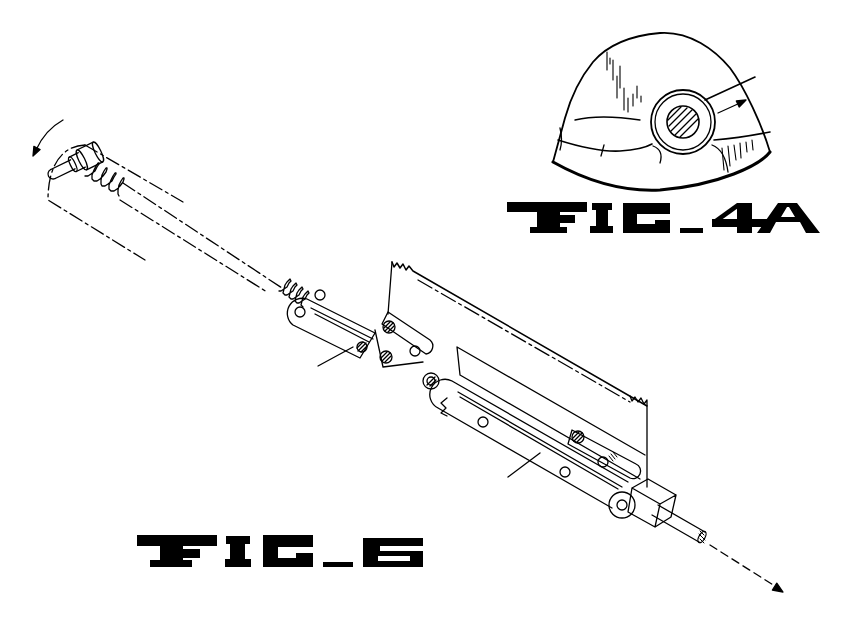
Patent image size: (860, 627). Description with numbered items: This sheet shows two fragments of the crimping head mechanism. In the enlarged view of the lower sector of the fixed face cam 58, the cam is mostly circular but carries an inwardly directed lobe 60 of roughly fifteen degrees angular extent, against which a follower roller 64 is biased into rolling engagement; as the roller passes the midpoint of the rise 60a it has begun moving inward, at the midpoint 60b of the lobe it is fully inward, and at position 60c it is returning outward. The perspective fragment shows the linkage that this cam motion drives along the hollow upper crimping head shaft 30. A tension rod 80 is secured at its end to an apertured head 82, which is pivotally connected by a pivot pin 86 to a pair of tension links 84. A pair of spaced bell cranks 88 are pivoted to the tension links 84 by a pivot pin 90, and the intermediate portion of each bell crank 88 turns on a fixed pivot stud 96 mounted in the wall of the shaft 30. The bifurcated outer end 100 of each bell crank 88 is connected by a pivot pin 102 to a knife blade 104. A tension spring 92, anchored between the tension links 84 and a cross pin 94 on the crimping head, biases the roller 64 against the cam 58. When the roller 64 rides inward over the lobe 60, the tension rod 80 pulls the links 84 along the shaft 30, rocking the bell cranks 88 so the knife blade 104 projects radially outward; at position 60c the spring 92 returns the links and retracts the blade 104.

In FIG. 6, the upper crimping head shaft 30 is at (157, 185).
In FIG. 4A, the face cam 58 is at (566, 140).
In FIG. 4A, the lobe 60 is at (647, 145).
In FIG. 4A, the midpoint of the rise 60a is at (603, 150).
In FIG. 4A, the midpoint of the lobe 60b is at (651, 165).
In FIG. 4A, the return position of the lobe 60c is at (712, 156).
In FIG. 4A, the follower roller 64 is at (698, 107).
In FIG. 6, the tension rod 80 is at (683, 521).
In FIG. 6, the apertured head 82 is at (663, 494).
In FIG. 6, the tension links 84 is at (343, 298).
In FIG. 6, the pivot pin 86 is at (619, 509).
In FIG. 6, the bell crank 88 is at (387, 364).
In FIG. 6, the pivot pin 90 is at (370, 360).
In FIG. 6, the tension spring 92 is at (110, 200).
In FIG. 6, the cross pin 94 is at (101, 154).
In FIG. 6, the pivot stud 96 is at (391, 322).
In FIG. 6, the bifurcated outer end 100 is at (423, 335).
In FIG. 6, the pivot pin 102 is at (415, 358).
In FIG. 6, the knife blade 104 is at (493, 335).